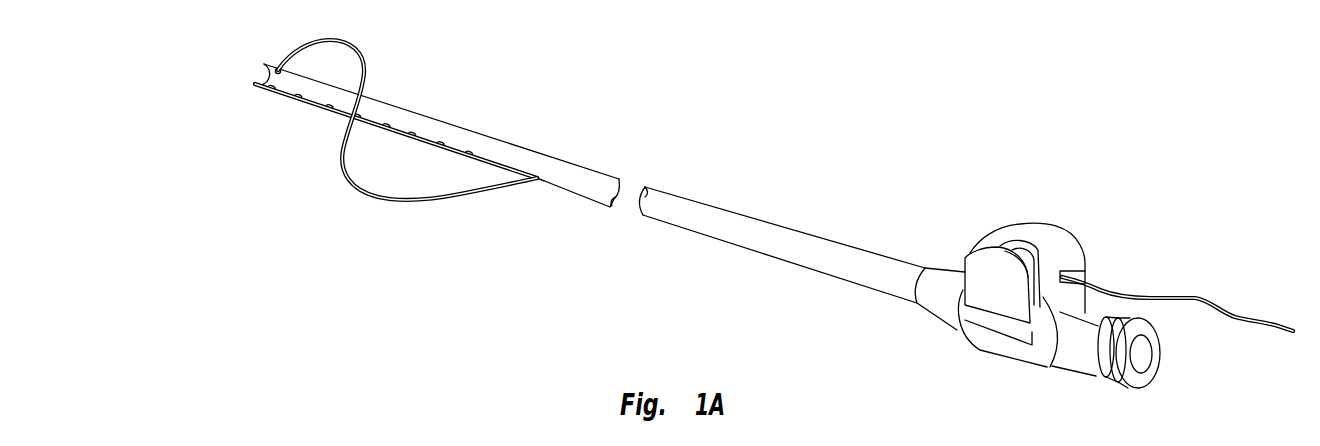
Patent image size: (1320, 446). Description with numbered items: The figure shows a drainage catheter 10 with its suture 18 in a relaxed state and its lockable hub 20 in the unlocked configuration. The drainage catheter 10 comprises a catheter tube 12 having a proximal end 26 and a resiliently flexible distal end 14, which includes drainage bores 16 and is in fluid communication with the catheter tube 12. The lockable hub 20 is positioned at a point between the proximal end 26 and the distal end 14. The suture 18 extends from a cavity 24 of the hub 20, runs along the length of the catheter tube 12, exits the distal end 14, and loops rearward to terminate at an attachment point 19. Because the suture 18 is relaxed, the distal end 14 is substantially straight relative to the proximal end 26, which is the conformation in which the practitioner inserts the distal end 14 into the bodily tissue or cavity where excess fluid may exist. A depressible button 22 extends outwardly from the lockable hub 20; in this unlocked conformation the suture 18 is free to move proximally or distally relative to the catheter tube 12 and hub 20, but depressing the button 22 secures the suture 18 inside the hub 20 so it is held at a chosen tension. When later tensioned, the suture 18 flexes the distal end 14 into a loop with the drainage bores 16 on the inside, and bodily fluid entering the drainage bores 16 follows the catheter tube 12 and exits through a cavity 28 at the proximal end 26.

The drainage catheter 10 is at (922, 255).
The catheter tube 12 is at (748, 228).
The distal end 14 is at (386, 133).
The drainage bores 16 is at (333, 112).
The suture 18 is at (430, 204).
The attachment point 19 is at (537, 177).
The lockable hub 20 is at (1041, 296).
The depressible button 22 is at (972, 283).
The cavity 24 is at (1085, 245).
The proximal end 26 is at (1097, 374).
The cavity 28 is at (1143, 360).